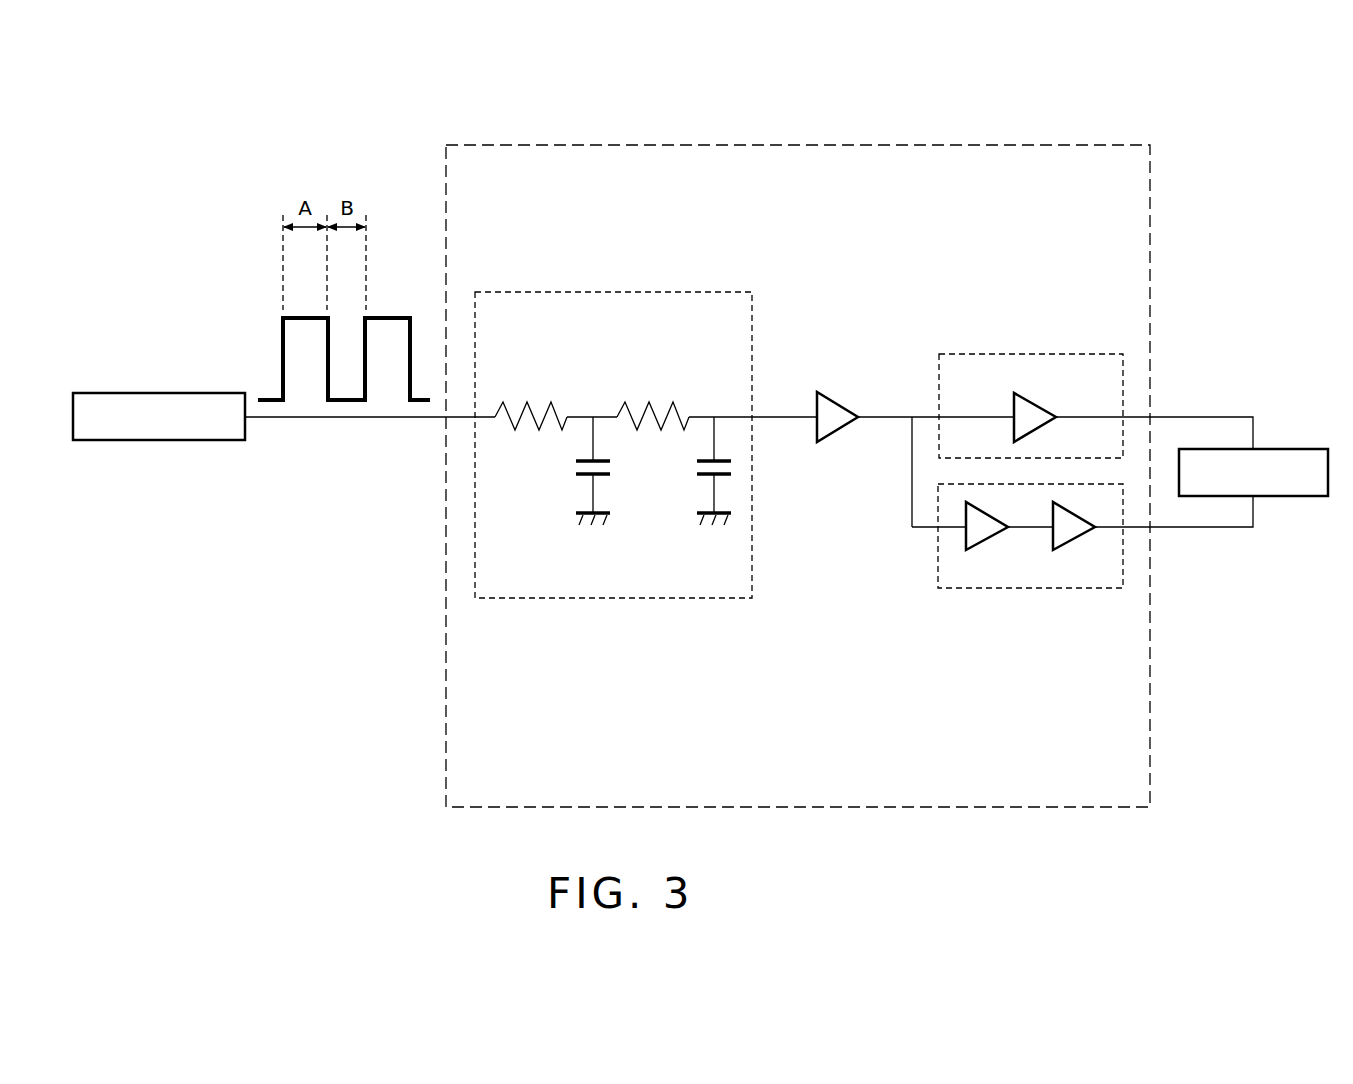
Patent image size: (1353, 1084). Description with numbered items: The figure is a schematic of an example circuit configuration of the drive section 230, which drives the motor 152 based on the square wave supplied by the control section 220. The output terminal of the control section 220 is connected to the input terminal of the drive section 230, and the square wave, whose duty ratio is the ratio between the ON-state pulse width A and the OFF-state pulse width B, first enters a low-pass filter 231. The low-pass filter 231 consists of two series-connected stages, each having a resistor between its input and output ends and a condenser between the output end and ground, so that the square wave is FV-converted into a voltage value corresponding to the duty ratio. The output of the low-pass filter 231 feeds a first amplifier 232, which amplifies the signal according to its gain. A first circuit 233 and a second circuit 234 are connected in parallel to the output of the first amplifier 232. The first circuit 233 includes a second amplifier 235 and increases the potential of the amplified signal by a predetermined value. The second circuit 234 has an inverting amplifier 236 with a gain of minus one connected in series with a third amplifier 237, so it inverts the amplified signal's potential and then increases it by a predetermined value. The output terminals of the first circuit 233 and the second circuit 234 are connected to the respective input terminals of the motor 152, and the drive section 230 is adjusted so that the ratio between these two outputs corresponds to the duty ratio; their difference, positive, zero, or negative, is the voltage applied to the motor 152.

The control section 220 is at (158, 393).
The drive section 230 is at (800, 144).
The low-pass filter 231 is at (621, 291).
The first amplifier 232 is at (843, 402).
The first circuit 233 is at (1033, 353).
The second circuit 234 is at (1029, 590).
The second amplifier 235 is at (1032, 402).
The inverting amplifier 236 is at (990, 538).
The third amplifier 237 is at (1076, 538).
The motor 152 is at (1297, 448).